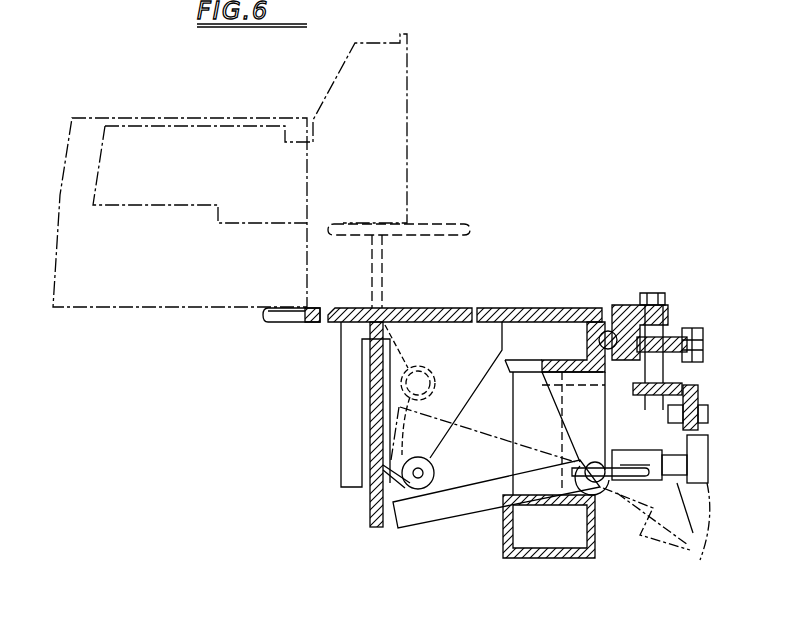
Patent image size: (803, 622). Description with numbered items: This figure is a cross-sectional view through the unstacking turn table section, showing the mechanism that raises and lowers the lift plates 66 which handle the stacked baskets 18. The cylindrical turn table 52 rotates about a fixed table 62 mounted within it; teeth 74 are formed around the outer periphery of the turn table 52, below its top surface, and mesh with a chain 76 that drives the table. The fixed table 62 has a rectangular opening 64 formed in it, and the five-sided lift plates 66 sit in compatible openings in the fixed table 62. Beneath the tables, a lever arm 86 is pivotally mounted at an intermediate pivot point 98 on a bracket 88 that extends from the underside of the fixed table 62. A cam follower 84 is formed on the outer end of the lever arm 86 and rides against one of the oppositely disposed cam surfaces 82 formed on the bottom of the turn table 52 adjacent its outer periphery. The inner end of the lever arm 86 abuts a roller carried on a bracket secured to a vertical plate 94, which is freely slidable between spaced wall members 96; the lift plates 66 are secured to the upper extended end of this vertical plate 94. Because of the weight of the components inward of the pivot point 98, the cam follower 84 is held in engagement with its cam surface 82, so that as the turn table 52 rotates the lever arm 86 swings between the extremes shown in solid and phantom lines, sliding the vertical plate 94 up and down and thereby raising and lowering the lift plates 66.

The baskets or trays 18 is at (150, 307).
The cylindrical turn table 52 is at (627, 305).
The fixed table 62 is at (548, 308).
The rectangular opening 64 is at (308, 315).
The lift plates 66 is at (412, 235).
The teeth 74 is at (673, 340).
The chain 76 is at (703, 343).
The cam surfaces 82 is at (678, 442).
The cam follower 84 is at (656, 536).
The lever arm 86 is at (452, 503).
The bracket 88 is at (593, 408).
The vertical plate 94 is at (370, 433).
The wall members 96 is at (360, 380).
The pivot point 98 is at (603, 493).